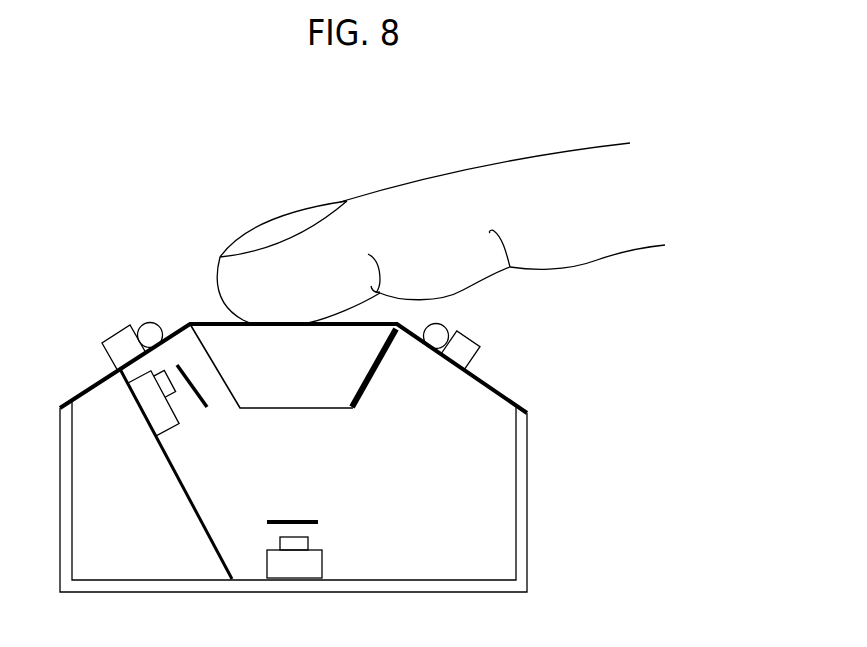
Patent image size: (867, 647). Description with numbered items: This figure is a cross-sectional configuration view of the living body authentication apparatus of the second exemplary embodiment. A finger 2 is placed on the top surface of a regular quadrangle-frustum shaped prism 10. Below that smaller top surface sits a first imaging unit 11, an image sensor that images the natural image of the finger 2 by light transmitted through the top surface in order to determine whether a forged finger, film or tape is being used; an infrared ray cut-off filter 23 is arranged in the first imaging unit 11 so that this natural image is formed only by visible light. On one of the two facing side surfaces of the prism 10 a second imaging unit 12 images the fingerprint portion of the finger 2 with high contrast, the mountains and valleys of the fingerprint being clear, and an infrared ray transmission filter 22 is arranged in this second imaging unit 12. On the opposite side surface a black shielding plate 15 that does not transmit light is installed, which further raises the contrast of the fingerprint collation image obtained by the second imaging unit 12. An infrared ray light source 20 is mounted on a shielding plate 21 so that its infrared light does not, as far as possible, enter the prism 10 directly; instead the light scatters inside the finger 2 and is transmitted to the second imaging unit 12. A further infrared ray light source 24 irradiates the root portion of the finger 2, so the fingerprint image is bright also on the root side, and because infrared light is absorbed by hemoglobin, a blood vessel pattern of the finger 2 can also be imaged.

The finger 2 is at (345, 201).
The prism 10 is at (333, 408).
The first imaging unit 11 is at (322, 560).
The second imaging unit 12 is at (176, 428).
The black shielding plate 15 is at (372, 386).
The infrared ray light source 20 is at (148, 322).
The shielding plate 21 is at (86, 388).
The infrared ray transmission filter 22 is at (208, 408).
The infrared ray cut-off filter 23 is at (295, 520).
The infrared ray light source 24 is at (474, 338).